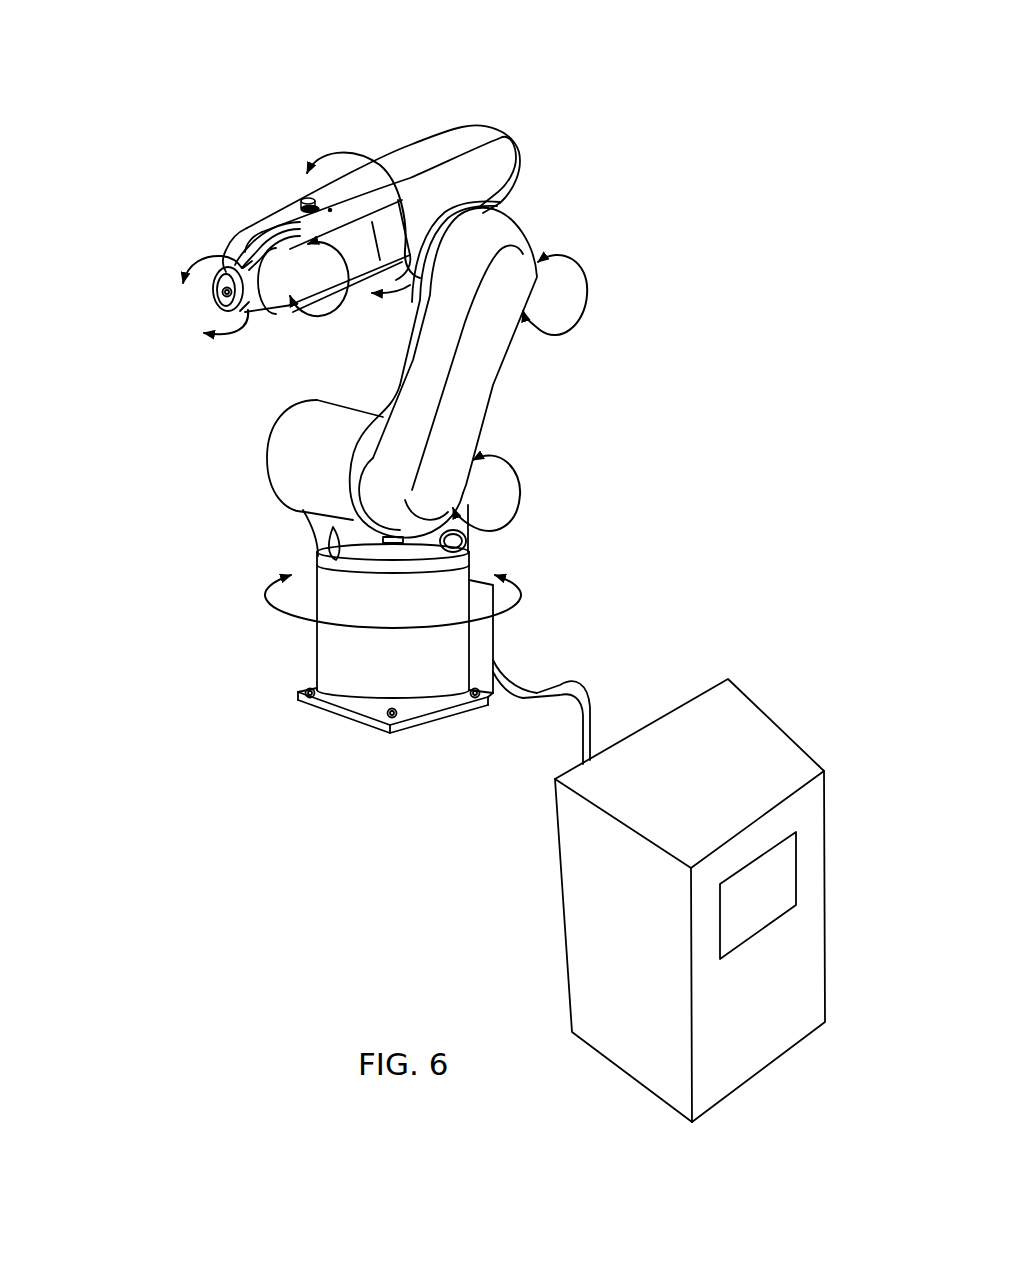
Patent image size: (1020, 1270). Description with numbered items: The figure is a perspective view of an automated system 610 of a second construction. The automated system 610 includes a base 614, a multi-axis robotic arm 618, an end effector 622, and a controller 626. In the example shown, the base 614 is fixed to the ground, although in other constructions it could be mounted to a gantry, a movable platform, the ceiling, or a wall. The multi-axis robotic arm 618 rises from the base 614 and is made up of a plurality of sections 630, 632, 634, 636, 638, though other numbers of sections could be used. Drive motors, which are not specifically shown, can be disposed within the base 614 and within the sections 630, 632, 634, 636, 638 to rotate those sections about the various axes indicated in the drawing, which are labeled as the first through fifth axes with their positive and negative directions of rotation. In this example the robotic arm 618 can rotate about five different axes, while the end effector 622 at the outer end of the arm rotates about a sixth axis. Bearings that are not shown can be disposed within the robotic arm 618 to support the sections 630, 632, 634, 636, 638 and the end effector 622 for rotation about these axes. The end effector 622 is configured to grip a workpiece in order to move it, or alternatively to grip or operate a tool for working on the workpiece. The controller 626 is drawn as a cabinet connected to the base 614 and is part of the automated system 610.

The automated system 610 is at (167, 60).
The base 614 is at (330, 660).
The multi-axis robotic arm 618 is at (690, 113).
The end effector 622 is at (218, 284).
The controller 626 is at (583, 888).
The section 630 is at (292, 450).
The section 632 is at (482, 366).
The section 634 is at (483, 132).
The section 636 is at (320, 192).
The section 638 is at (243, 262).